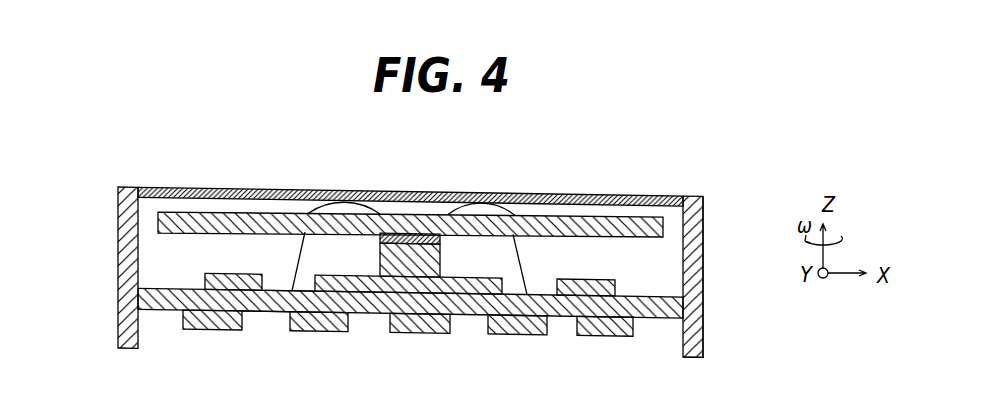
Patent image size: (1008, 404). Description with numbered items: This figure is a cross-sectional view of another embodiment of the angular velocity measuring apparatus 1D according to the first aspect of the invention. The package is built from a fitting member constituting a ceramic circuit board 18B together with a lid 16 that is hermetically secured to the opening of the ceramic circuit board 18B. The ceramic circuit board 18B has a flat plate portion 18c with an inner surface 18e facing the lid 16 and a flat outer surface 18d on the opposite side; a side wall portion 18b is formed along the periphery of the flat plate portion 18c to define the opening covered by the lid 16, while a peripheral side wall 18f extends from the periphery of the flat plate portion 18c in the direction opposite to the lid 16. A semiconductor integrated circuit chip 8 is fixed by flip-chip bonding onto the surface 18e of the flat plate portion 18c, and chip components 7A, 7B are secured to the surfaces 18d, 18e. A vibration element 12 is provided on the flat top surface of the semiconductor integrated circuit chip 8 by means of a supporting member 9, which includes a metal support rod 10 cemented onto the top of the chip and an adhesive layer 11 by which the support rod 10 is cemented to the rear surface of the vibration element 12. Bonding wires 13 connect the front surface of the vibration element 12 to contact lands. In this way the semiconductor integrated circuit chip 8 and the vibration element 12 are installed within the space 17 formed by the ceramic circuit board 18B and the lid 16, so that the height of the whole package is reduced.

The angular velocity measuring apparatus 1D is at (715, 220).
The chip component 7A is at (203, 318).
The chip component 7B is at (237, 275).
The semiconductor integrated circuit chip 8 is at (460, 274).
The supporting member 9 is at (412, 214).
The support rod 10 is at (415, 260).
The adhesive layer 11 is at (385, 213).
The vibration element 12 is at (433, 227).
The bonding wires 13 is at (483, 208).
The lid 16 is at (533, 189).
The space 17 is at (665, 268).
The side wall portion 18b is at (128, 232).
The ceramic circuit board 18B is at (715, 283).
The flat plate portion 18c is at (272, 300).
The outer surface 18d is at (260, 308).
The inner surface 18e is at (282, 286).
The peripheral side wall 18f is at (690, 332).